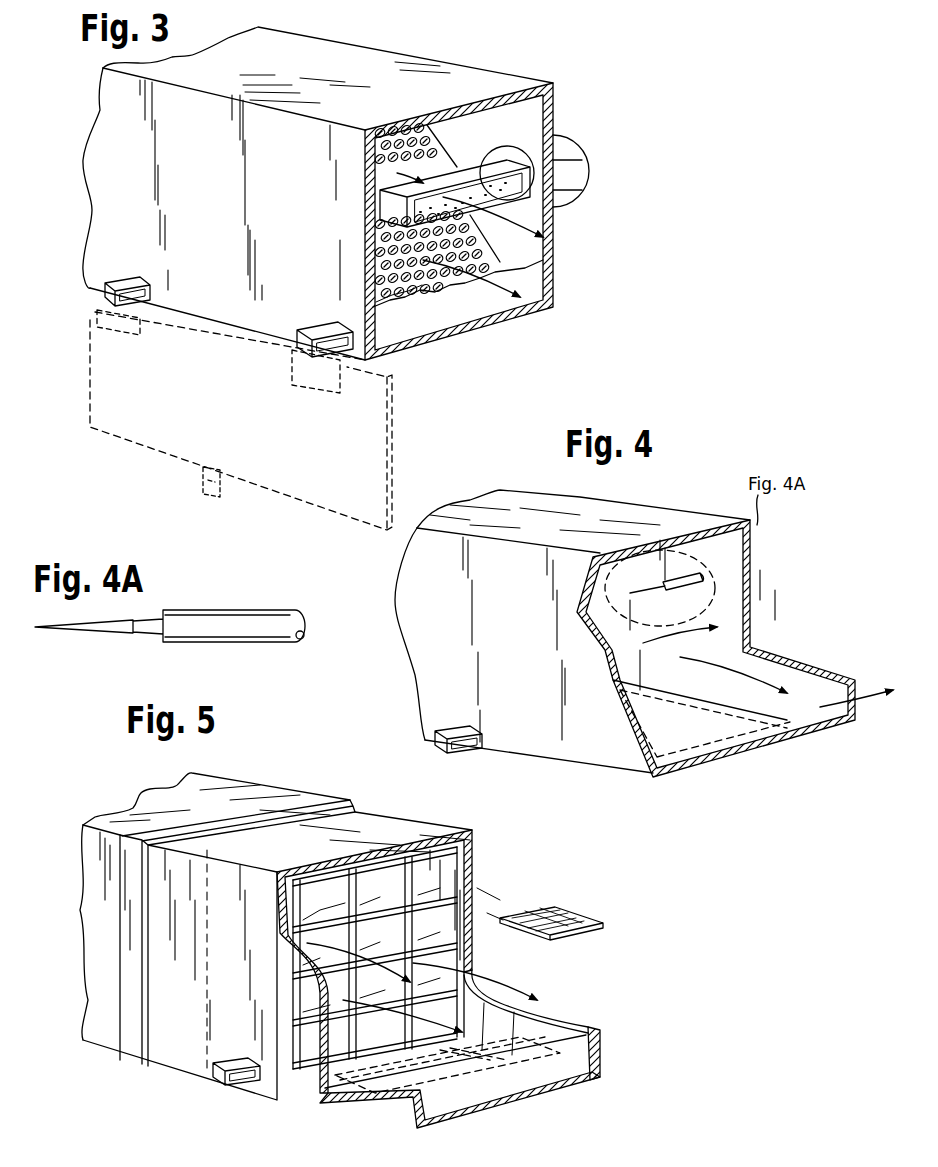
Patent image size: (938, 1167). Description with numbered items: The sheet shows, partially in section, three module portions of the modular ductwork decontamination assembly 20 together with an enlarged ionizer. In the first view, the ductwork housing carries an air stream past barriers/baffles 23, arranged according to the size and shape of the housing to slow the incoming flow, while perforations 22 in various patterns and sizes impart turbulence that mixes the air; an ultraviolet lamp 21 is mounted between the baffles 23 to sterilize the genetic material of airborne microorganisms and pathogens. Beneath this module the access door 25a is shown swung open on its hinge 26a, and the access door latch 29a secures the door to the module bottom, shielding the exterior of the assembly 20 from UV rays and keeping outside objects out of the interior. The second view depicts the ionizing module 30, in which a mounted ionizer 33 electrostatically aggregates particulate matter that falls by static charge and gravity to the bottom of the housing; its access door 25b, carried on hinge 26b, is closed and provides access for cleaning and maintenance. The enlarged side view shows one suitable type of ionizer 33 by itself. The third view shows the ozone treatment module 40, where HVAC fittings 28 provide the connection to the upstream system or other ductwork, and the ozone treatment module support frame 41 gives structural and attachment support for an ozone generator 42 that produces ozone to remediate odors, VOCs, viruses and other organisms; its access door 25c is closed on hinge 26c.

In FIG. 3, the ductwork decontamination assembly 20 is at (165, 198).
In FIG. 3, the ultraviolet lamp 21 is at (576, 180).
In FIG. 3, the perforations 22 is at (433, 133).
In FIG. 3, the barriers/baffles 23 is at (392, 130).
In FIG. 3, the access door 25a is at (187, 395).
In FIG. 3, the hinge 26a is at (93, 298).
In FIG. 3, the access door latch 29a is at (222, 487).
In FIG. 4, the ionizing module 30 is at (678, 537).
In FIG. 4, the ionizer 33 is at (705, 585).
In FIG. 4A, the ionizer 33 is at (193, 618).
In FIG. 4, the access door 25b is at (684, 738).
In FIG. 4, the hinge 26b is at (470, 752).
In FIG. 5, the HVAC fittings 28 is at (330, 797).
In FIG. 5, the ozone treatment module 40 is at (183, 988).
In FIG. 5, the ozone treatment module support frame 41 is at (345, 1085).
In FIG. 5, the ozone generator 42 is at (575, 915).
In FIG. 5, the access door 25c is at (398, 1075).
In FIG. 5, the hinge 26c is at (222, 1093).